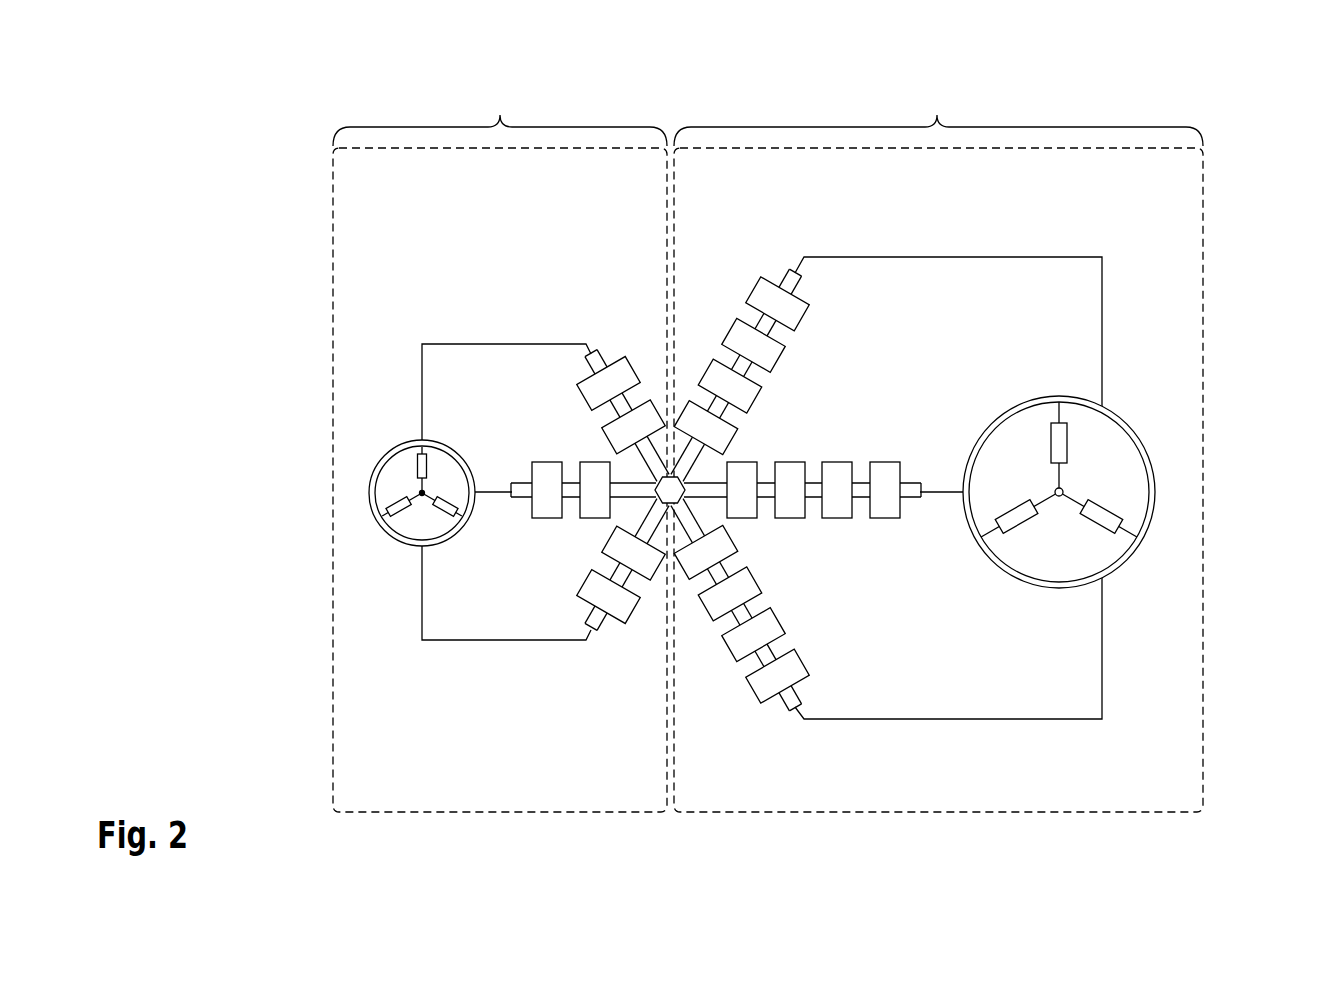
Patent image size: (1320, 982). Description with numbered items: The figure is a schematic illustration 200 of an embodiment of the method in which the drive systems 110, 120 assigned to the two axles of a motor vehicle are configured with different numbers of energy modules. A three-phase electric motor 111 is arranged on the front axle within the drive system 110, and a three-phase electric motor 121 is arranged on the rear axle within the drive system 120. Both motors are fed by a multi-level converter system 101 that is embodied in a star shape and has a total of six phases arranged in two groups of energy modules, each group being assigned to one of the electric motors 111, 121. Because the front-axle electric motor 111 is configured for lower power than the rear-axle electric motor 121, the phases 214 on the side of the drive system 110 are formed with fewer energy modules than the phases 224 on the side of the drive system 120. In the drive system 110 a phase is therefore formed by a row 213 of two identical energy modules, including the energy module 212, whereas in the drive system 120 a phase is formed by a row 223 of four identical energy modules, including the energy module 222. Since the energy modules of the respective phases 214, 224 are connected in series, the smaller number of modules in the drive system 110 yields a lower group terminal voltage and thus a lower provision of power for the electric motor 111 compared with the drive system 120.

The schematic illustration 200 is at (232, 157).
The drive system 110 is at (500, 448).
The drive system 120 is at (938, 448).
The three-phase electric motor 111 is at (366, 481).
The three-phase electric motor 121 is at (1160, 478).
The multi-level converter system 101 is at (704, 527).
The energy module 212 is at (534, 530).
The row of energy modules 213 is at (563, 502).
The phases 214 is at (637, 467).
The energy module 222 is at (891, 531).
The row of energy modules 223 is at (815, 501).
The phases 224 is at (733, 566).